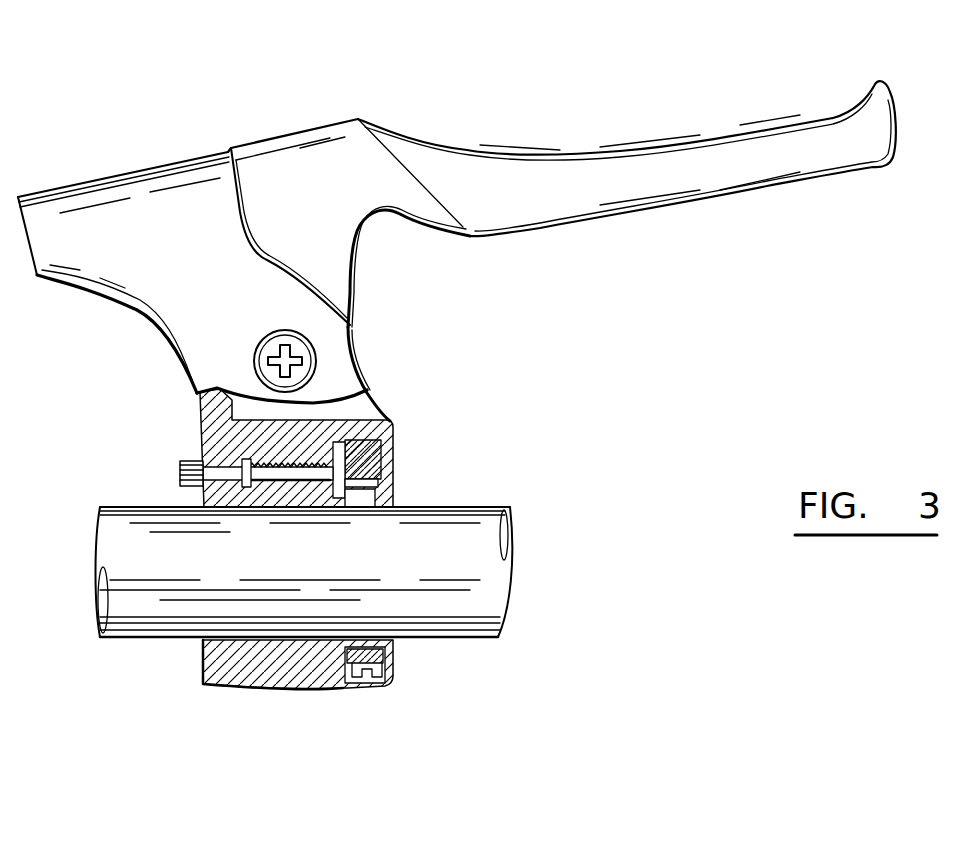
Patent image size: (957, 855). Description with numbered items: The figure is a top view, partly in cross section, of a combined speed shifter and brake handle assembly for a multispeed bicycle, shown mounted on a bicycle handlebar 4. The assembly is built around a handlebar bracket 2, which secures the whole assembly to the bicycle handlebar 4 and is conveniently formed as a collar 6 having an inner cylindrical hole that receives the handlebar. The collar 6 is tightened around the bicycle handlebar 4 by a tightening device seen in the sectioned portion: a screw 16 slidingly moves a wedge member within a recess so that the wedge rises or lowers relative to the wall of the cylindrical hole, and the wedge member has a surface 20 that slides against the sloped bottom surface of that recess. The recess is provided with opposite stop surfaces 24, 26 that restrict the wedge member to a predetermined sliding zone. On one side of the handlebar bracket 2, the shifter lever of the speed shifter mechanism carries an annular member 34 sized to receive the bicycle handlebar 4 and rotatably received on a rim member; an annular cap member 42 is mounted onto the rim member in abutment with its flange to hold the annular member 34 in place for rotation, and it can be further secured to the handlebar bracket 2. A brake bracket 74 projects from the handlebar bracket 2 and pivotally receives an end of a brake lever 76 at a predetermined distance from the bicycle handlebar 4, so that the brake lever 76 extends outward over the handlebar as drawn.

The handlebar bracket 2 is at (273, 688).
The bicycle handlebar 4 is at (467, 610).
The collar 6 is at (210, 685).
The screw 16 is at (180, 465).
The surface 20 is at (307, 496).
The stop surface 24 is at (263, 496).
The stop surface 26 is at (395, 453).
The annular member 34 is at (353, 684).
The annular cap member 42 is at (395, 475).
The brake bracket 74 is at (116, 173).
The brake lever 76 is at (493, 170).